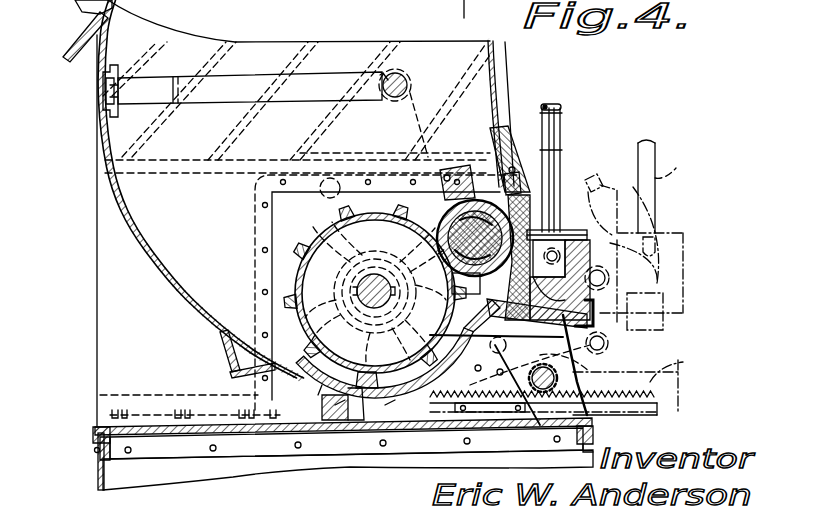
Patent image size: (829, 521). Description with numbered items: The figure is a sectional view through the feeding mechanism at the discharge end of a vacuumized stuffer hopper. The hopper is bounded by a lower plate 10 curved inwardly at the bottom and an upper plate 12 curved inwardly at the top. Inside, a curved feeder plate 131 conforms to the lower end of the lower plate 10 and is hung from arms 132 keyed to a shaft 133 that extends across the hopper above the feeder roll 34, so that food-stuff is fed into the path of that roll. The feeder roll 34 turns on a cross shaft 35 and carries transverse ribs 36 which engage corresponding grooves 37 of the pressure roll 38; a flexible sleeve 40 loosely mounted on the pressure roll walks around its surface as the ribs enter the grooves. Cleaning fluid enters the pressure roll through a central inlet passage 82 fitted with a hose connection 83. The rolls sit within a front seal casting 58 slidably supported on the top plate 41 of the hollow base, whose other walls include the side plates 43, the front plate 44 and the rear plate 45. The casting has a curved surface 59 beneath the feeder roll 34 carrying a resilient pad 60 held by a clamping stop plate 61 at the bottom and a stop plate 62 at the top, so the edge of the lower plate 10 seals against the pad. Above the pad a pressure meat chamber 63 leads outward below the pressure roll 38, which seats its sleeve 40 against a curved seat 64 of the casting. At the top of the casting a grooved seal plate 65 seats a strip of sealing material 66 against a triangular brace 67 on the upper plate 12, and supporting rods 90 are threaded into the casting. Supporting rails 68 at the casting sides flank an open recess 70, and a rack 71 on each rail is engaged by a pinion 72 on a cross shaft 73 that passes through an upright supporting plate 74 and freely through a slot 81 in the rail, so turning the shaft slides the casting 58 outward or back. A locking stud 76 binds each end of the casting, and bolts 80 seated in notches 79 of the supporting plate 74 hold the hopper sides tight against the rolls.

The lower plate 10 is at (108, 198).
The upper plate 12 is at (505, 60).
The curved feeder plate 131 is at (145, 236).
The arms 132 is at (208, 95).
The shaft 133 is at (397, 72).
The triangular brace 67 is at (507, 125).
The pressure roll 38 is at (445, 167).
The grooves 37 is at (485, 180).
The supporting rods 90 is at (545, 110).
The strip of sealing material 66 is at (503, 152).
The grooved seal plate 65 is at (503, 187).
The central inlet passage 82 is at (520, 190).
The sleeve 40 is at (608, 192).
The hose connection 83 is at (560, 221).
The curved seat 64 is at (583, 247).
The front seal casting 58 is at (680, 270).
The pressure meat chamber 63 is at (603, 252).
The notches 79 is at (603, 276).
The upright supporting plate 74 is at (300, 214).
The feeder roll 34 is at (347, 221).
The ribs 36 is at (280, 293).
The cross shaft 35 is at (362, 300).
The stop plate 62 is at (398, 349).
The clamping stop plate 61 is at (330, 385).
The curved surface 59 is at (395, 400).
The resilient pad 60 is at (345, 400).
The open recess 70 is at (609, 344).
The supporting rails 68 is at (603, 366).
The pinion 72 is at (570, 380).
The cross shaft 73 is at (541, 395).
The slot 81 is at (668, 365).
The rack 71 is at (682, 370).
The locking stud 76 is at (478, 368).
The bolts 80 is at (500, 372).
The front plate 44 is at (603, 444).
The top plate 41 is at (233, 437).
The side plates 43 is at (168, 470).
The rear plate 45 is at (99, 475).